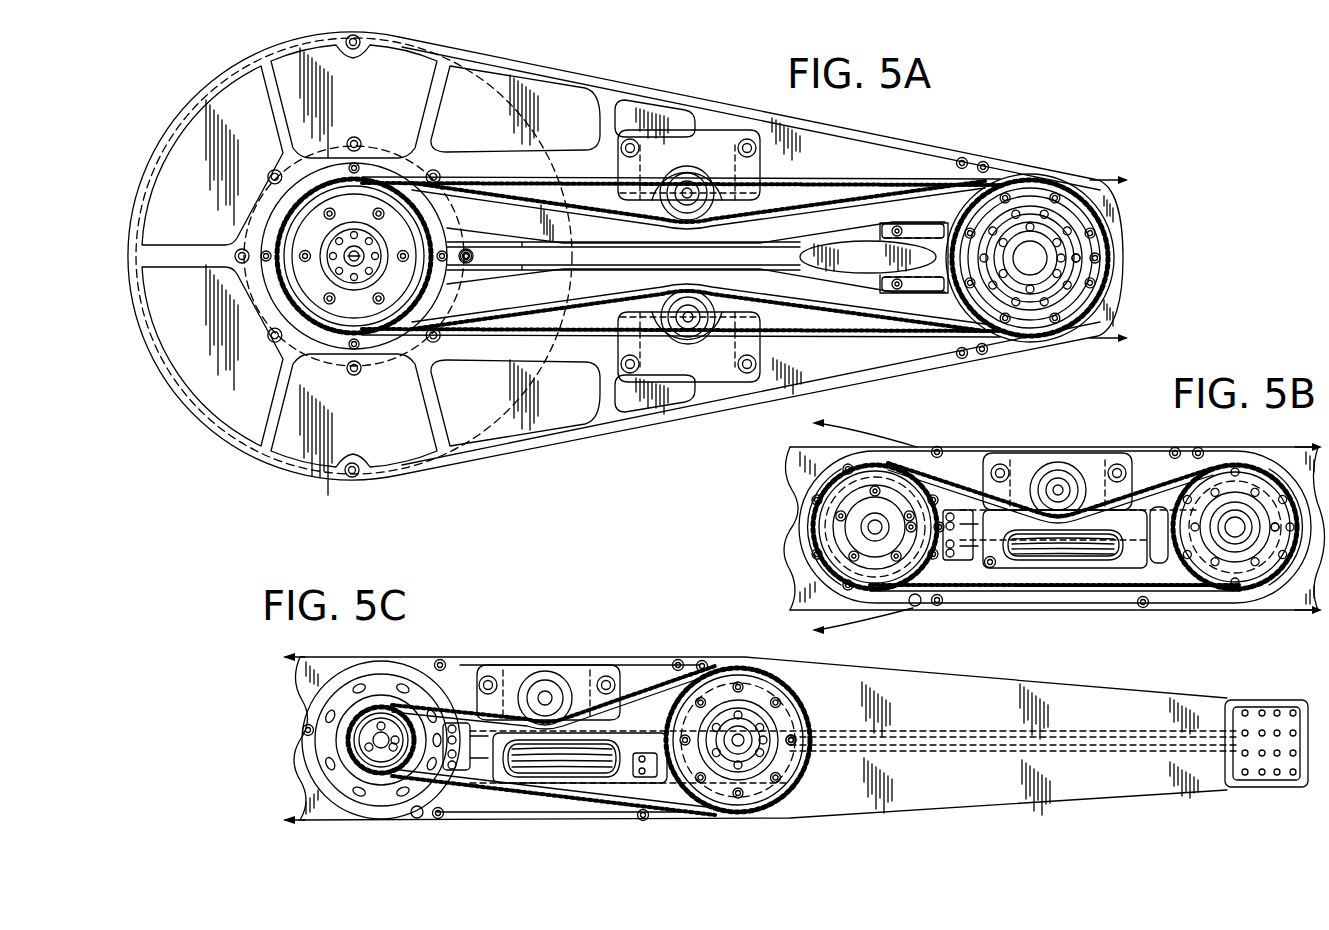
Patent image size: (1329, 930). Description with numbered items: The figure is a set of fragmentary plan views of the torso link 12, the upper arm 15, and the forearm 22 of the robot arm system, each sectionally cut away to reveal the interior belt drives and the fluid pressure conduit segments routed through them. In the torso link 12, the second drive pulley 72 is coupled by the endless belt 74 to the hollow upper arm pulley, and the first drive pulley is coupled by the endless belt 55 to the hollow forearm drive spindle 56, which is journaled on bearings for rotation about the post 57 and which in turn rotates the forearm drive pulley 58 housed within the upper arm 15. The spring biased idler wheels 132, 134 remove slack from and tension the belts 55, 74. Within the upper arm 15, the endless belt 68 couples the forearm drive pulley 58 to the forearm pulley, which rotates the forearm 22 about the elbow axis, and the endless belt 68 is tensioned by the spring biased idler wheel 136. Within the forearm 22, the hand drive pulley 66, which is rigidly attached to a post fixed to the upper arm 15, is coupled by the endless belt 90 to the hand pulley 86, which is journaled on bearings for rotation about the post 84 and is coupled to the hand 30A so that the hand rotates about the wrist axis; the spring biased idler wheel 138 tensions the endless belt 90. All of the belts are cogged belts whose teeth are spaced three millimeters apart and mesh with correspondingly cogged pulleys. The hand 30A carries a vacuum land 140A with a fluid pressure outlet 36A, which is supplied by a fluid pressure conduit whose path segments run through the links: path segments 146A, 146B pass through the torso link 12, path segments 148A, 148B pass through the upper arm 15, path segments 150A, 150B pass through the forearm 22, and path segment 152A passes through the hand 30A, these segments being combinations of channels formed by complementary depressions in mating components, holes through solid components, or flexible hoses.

In FIG. 5A, the torso link 12 is at (736, 380).
In FIG. 5A, the second drive pulley 72 is at (295, 208).
In FIG. 5A, the endless belt 74 is at (498, 193).
In FIG. 5A, the endless belt 55 is at (580, 177).
In FIG. 5A, the spring biased idler wheel 134 is at (697, 168).
In FIG. 5A, the spring biased idler wheel 132 is at (694, 344).
In FIG. 5A, the path segment 146A is at (447, 216).
In FIG. 5A, the path segment 146B is at (447, 296).
In FIG. 5A, the hollow forearm drive spindle 56 is at (1108, 231).
In FIG. 5A, the post 57 is at (1040, 262).
In FIG. 5B, the upper arm 15 is at (1040, 600).
In FIG. 5B, the forearm drive pulley 58 is at (833, 563).
In FIG. 5B, the spring biased idler wheel 136 is at (1050, 470).
In FIG. 5B, the endless belt 68 is at (1148, 488).
In FIG. 5B, the path segment 148A is at (970, 520).
In FIG. 5B, the path segment 148B is at (967, 558).
In FIG. 5C, the forearm 22 is at (475, 814).
In FIG. 5C, the hand 30A is at (980, 705).
In FIG. 5C, the path segment 152A is at (872, 745).
In FIG. 5C, the hand drive pulley 66 is at (348, 748).
In FIG. 5C, the path segment 150A is at (473, 723).
In FIG. 5C, the path segment 150B is at (643, 778).
In FIG. 5C, the spring biased idler wheel 138 is at (536, 680).
In FIG. 5C, the endless belt 90 is at (638, 697).
In FIG. 5C, the hand pulley 86 is at (797, 687).
In FIG. 5C, the post 84 is at (777, 798).
In FIG. 5C, the vacuum land 140A is at (1277, 756).
In FIG. 5C, the fluid pressure outlet 36A is at (1248, 745).